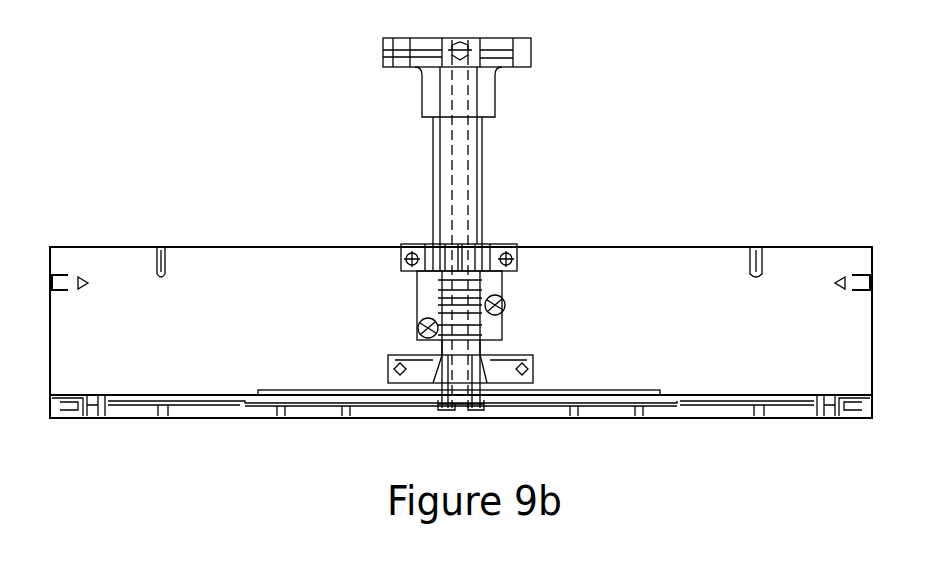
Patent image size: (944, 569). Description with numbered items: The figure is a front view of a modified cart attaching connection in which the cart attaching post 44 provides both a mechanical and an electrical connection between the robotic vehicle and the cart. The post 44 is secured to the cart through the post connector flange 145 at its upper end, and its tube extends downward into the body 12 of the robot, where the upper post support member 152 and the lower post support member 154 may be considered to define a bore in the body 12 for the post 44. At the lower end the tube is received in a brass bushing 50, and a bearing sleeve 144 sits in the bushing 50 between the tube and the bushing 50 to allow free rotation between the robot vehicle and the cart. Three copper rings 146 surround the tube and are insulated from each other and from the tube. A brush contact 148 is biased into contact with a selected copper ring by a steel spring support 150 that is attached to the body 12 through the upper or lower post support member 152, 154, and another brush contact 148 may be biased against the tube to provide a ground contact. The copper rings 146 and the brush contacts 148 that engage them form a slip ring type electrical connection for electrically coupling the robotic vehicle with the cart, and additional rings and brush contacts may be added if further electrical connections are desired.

The body 12 is at (743, 338).
The cart attaching post 44 is at (372, 180).
The brass bushing 50 is at (488, 410).
The bearing sleeve 144 is at (473, 408).
The post connector flange 145 is at (490, 88).
The copper rings 146 is at (481, 223).
The brush contact 148 is at (504, 312).
The steel spring support 150 is at (417, 286).
The upper post support member 152 is at (520, 243).
The lower post support member 154 is at (525, 378).